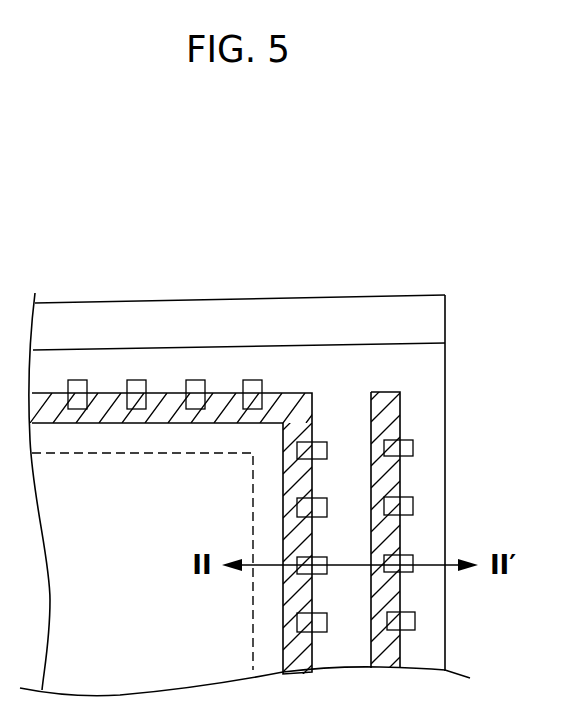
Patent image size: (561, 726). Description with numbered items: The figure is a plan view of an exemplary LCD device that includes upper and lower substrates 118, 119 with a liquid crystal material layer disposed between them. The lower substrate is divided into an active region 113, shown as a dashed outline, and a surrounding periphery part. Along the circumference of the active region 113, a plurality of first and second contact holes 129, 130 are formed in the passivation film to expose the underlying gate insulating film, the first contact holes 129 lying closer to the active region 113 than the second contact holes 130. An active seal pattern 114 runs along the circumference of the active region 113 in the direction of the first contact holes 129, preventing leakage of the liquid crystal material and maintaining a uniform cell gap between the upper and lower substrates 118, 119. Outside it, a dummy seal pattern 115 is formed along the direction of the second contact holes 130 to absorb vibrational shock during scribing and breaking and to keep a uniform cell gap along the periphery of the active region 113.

The active region 113 is at (253, 492).
The active seal pattern 114 is at (116, 408).
The dummy seal pattern 115 is at (395, 472).
The upper substrate 118 is at (436, 408).
The lower substrate 119 is at (436, 321).
The first contact holes 129 is at (195, 388).
The second contact holes 130 is at (405, 622).